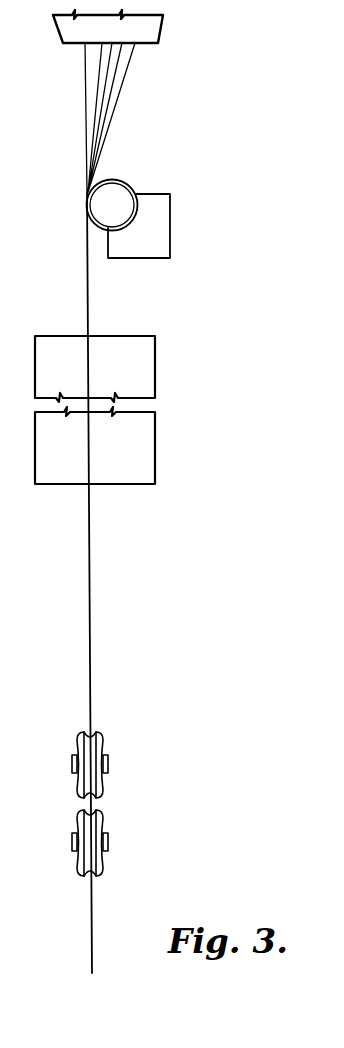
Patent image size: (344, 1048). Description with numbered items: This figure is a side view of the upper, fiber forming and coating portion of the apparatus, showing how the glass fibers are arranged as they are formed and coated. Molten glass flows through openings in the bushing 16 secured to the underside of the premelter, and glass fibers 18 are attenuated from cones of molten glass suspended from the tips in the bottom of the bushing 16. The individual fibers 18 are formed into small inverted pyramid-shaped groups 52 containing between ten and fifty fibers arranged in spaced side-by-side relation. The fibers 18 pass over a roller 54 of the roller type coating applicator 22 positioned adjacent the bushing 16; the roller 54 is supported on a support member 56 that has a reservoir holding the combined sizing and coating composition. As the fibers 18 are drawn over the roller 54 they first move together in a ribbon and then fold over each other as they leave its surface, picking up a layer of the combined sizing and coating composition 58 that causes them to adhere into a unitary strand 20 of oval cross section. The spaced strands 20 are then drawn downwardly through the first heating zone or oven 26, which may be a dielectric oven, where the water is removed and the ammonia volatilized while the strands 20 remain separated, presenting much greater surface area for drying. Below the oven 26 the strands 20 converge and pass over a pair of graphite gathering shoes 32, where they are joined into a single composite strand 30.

The bushing 16 is at (158, 33).
The glass fibers 18 is at (86, 69).
The strands 20 is at (88, 565).
The roller type coating applicator 22 is at (82, 196).
The first heating zone 26 is at (155, 357).
The composite strand 30 is at (91, 938).
The graphite gathering shoes 32 is at (103, 743).
The inverted pyramid-shaped groups 52 is at (125, 117).
The roller 54 is at (105, 192).
The support member 56 is at (170, 222).
The layer of combined sizing and coating composition 58 is at (131, 186).